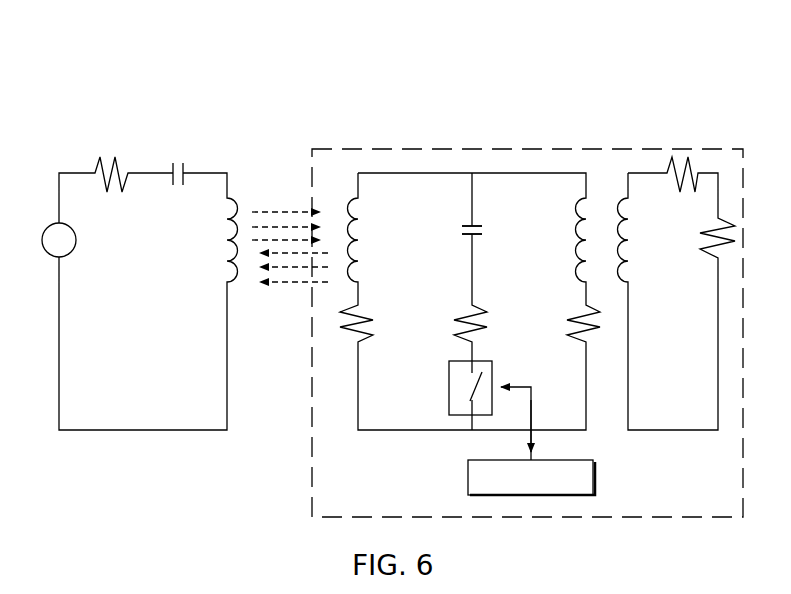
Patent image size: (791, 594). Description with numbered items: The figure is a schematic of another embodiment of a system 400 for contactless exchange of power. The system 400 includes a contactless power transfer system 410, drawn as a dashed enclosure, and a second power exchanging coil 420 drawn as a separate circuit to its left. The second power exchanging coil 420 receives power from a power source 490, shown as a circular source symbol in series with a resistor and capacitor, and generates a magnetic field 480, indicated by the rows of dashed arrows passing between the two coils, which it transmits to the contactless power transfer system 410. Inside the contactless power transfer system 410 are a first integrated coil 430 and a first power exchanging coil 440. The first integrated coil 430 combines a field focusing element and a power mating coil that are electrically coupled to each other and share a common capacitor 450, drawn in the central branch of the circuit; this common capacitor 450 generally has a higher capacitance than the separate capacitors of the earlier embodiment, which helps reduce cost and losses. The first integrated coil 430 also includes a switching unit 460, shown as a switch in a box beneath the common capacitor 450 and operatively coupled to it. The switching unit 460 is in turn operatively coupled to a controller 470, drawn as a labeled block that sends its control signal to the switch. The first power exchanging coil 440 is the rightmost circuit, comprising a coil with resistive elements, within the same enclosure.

The system for contactless exchange of power 400 is at (627, 51).
The contactless power transfer system 410 is at (493, 146).
The second power exchanging coil 420 is at (71, 170).
The first integrated coil 430 is at (385, 168).
The first power exchanging coil 440 is at (648, 169).
The common capacitor 450 is at (462, 227).
The switching unit 460 is at (493, 372).
The controller 470 is at (595, 478).
The magnetic field 480 is at (259, 212).
The power source 490 is at (76, 240).